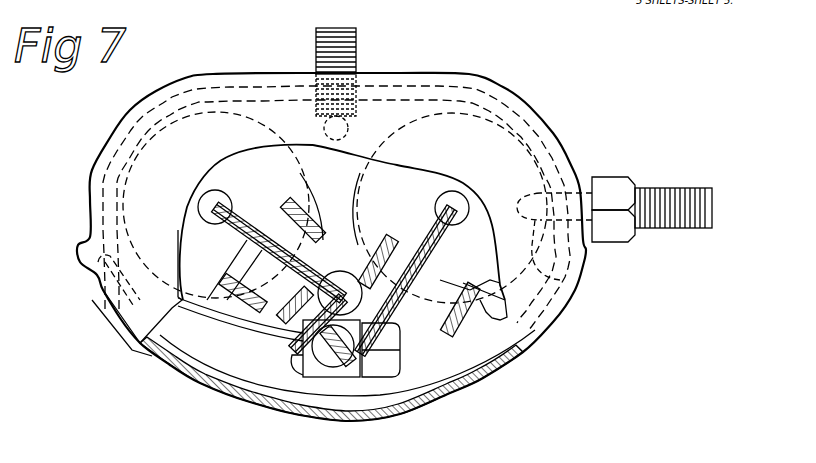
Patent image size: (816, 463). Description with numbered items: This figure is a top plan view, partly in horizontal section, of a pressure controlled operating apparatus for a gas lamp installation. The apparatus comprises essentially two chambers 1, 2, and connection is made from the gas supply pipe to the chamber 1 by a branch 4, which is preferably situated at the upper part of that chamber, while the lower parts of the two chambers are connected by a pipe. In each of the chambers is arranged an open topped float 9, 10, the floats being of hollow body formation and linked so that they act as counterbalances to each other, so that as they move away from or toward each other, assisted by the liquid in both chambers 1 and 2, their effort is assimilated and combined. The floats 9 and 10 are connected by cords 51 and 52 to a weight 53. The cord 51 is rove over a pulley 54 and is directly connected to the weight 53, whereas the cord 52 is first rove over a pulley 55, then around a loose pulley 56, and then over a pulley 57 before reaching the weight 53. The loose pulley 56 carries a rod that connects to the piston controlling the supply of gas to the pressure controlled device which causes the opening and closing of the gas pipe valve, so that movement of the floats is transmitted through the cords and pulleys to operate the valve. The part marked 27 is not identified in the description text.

The chamber 1 is at (175, 325).
The chamber 2 is at (486, 300).
The branch 4 is at (352, 70).
The float 9 is at (251, 222).
The float 10 is at (409, 222).
The bolt 27 is at (697, 200).
The cord 51 is at (200, 295).
The cord 52 is at (437, 233).
The weight 53 is at (331, 393).
The pulley 54 is at (222, 300).
The pulley 55 is at (441, 336).
The loose pulley 56 is at (308, 356).
The pulley 57 is at (262, 330).